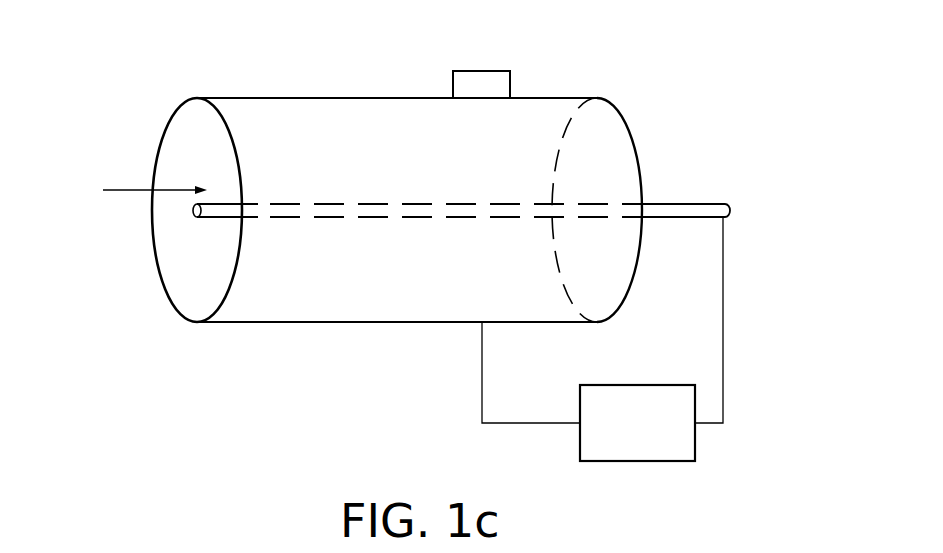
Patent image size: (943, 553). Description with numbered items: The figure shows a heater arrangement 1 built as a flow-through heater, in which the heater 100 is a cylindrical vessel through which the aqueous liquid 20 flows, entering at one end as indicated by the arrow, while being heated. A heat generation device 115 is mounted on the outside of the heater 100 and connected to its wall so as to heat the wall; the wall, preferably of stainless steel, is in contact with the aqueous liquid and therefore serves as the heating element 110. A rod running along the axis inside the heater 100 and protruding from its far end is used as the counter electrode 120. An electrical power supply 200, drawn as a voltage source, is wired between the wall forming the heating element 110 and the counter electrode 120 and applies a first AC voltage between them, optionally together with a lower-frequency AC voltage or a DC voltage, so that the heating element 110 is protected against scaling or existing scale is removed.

The heater arrangement 1 is at (338, 82).
The aqueous liquid 20 is at (147, 177).
The heater 100 is at (203, 347).
The heating element 110 is at (333, 322).
The heat generation device 115 is at (485, 80).
The counter electrode 120 is at (683, 207).
The electrical power supply 200 is at (714, 453).